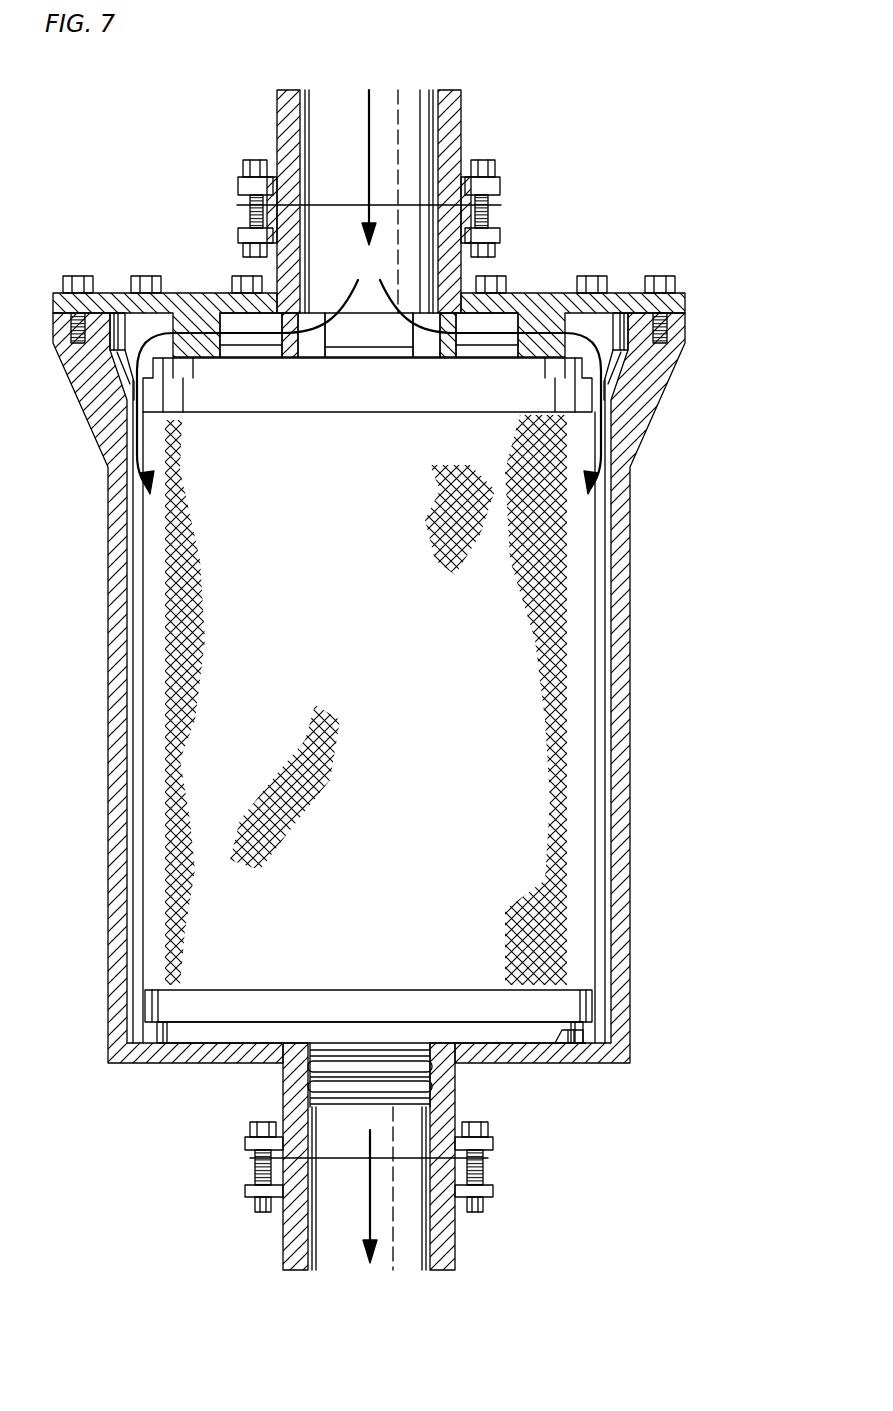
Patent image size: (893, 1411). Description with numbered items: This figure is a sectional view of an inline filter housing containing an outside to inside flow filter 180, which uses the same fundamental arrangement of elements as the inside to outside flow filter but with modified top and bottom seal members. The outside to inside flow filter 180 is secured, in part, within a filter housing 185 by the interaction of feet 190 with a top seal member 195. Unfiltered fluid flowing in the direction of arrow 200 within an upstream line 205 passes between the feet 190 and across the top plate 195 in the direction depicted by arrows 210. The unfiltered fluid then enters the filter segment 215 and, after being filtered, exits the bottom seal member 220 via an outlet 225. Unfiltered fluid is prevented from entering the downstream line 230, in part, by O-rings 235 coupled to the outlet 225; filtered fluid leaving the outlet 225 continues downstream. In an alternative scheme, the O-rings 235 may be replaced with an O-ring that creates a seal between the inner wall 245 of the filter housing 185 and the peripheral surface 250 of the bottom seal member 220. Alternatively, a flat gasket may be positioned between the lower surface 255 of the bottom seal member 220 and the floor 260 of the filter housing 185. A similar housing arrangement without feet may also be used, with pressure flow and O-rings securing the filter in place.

The outside to inside flow filter 180 is at (594, 528).
The filter housing 185 is at (632, 599).
The feet 190 is at (533, 328).
The top seal member 195 is at (171, 342).
The arrow 200 is at (370, 115).
The upstream line 205 is at (460, 138).
The arrows 210 is at (607, 396).
The filter segment 215 is at (545, 778).
The bottom seal member 220 is at (592, 1010).
The outlet 225 is at (413, 1082).
The downstream line 230 is at (456, 1242).
The O-rings 235 is at (310, 1096).
The inner wall 245 is at (140, 950).
The peripheral surface 250 is at (146, 1005).
The lower surface 255 is at (553, 1031).
The floor 260 is at (568, 1045).